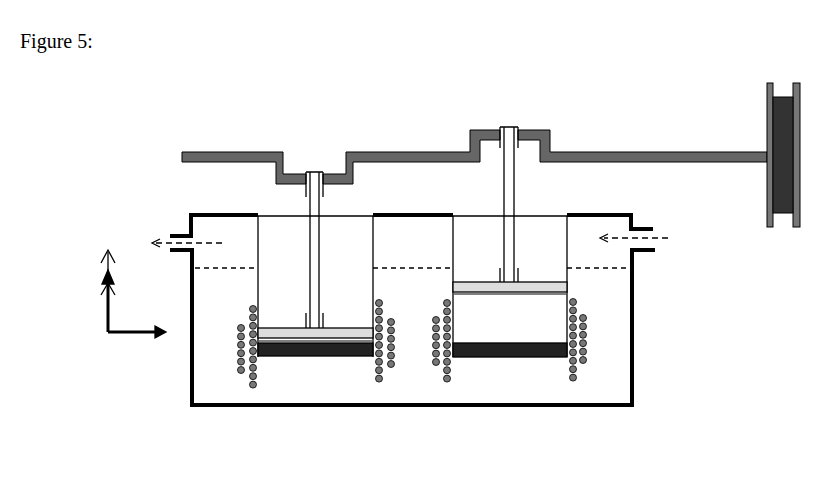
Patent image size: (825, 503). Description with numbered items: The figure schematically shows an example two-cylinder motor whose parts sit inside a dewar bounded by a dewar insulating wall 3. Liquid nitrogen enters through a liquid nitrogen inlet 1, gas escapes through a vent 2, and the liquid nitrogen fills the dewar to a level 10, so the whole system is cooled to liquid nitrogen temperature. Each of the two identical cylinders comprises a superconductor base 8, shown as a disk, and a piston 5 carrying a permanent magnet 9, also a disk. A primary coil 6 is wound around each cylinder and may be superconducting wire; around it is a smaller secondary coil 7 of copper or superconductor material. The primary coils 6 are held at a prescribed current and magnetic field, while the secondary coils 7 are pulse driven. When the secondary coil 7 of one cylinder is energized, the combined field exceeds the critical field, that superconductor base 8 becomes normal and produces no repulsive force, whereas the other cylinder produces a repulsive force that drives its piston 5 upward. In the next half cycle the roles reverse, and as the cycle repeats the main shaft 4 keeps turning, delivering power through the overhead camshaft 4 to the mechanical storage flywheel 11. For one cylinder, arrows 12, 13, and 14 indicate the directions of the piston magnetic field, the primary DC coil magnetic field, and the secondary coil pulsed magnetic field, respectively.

The liquid nitrogen inlet 1 is at (175, 234).
The vent 2 is at (655, 226).
The dewar insulating wall 3 is at (632, 380).
The main shaft 4 is at (412, 152).
The piston 5 is at (316, 240).
The primary coil 6 is at (380, 381).
The secondary coil 7 is at (240, 372).
The superconductor base 8 is at (277, 356).
The permanent magnet 9 is at (326, 340).
The liquid nitrogen level 10 is at (598, 270).
The flywheel 11 is at (770, 228).
The piston magnetic field direction arrow 12 is at (137, 334).
The primary DC coil magnetic field direction arrow 13 is at (107, 292).
The secondary coil pulsed magnetic field direction arrow 14 is at (106, 262).